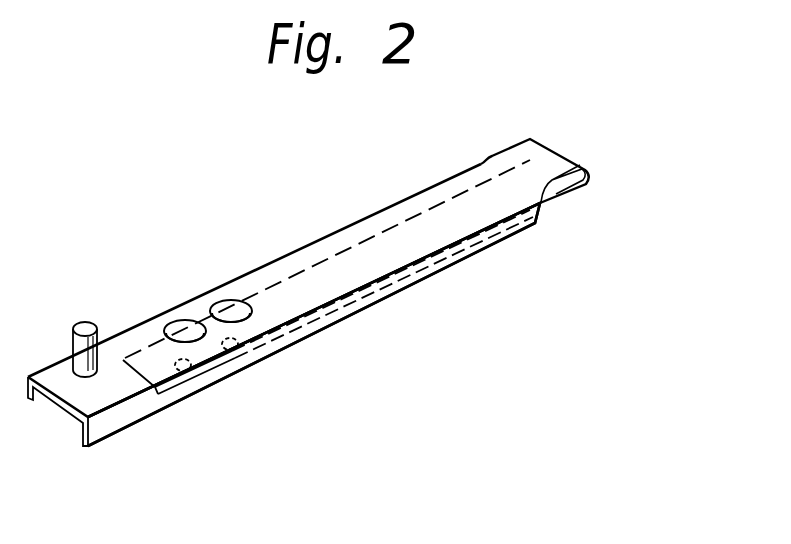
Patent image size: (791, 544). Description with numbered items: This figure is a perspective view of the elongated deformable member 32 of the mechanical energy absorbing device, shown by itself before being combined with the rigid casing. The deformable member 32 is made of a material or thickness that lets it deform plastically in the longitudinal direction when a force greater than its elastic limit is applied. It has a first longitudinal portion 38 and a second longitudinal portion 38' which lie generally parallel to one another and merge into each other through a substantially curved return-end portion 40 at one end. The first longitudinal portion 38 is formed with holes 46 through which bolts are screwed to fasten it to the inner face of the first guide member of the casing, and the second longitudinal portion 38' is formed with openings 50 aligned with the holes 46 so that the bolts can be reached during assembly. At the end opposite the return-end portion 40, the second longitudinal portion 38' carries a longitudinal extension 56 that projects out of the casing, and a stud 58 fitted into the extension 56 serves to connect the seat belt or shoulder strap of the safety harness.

The deformable member 32 is at (448, 291).
The first longitudinal portion 38 is at (328, 302).
The second longitudinal portion 38' is at (327, 259).
The return-end portion 40 is at (591, 175).
The holes 46 is at (238, 349).
The openings 50 is at (170, 322).
The longitudinal extension 56 is at (118, 432).
The stud 58 is at (76, 324).